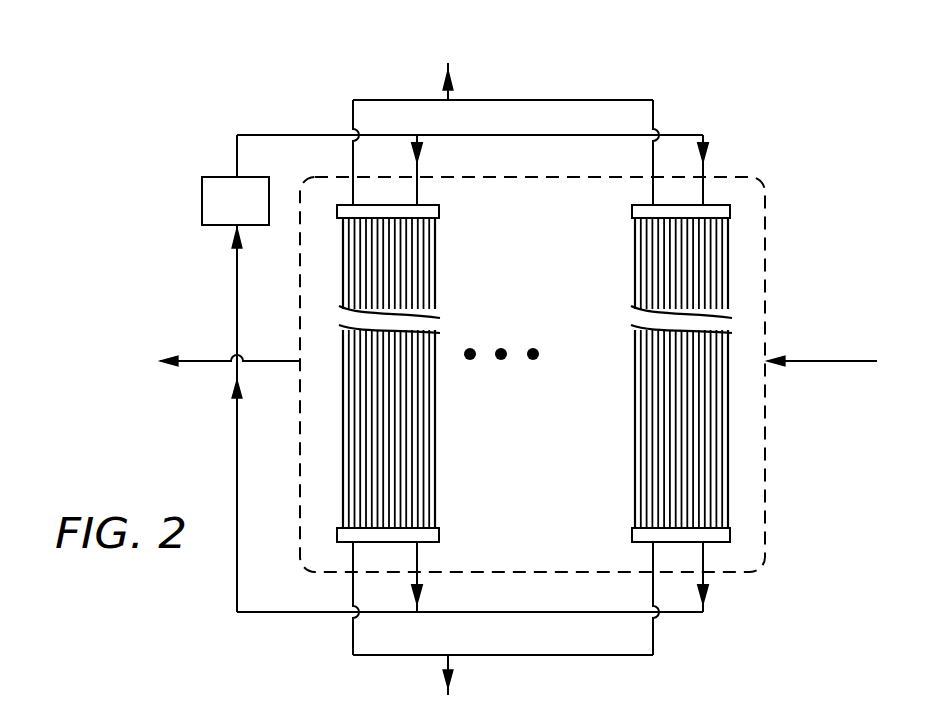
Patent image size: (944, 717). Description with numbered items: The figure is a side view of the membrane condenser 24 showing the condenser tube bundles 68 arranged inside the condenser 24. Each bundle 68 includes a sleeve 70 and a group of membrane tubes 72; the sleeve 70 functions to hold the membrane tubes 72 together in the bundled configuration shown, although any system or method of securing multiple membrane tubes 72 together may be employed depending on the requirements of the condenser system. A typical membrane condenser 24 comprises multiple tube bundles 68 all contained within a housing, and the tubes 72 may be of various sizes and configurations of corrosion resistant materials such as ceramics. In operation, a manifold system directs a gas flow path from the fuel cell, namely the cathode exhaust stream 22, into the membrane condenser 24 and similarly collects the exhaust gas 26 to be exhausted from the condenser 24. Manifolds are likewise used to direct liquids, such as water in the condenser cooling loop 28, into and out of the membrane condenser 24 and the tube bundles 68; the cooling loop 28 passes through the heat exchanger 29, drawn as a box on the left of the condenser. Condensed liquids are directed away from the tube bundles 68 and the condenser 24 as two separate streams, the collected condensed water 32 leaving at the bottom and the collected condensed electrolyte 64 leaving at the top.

The fuel cell exhaust stream 22 is at (820, 361).
The membrane condenser 24 is at (765, 285).
The exhaust gas 26 is at (195, 361).
The condenser cooling loop 28 is at (237, 260).
The heat exchanger 29 is at (202, 200).
The collected condensed water 32 is at (448, 660).
The collected condensed electrolyte 64 is at (448, 97).
The membrane tube bundles 68 is at (436, 293).
The sleeve 70 is at (440, 206).
The membrane tubes 72 is at (412, 422).